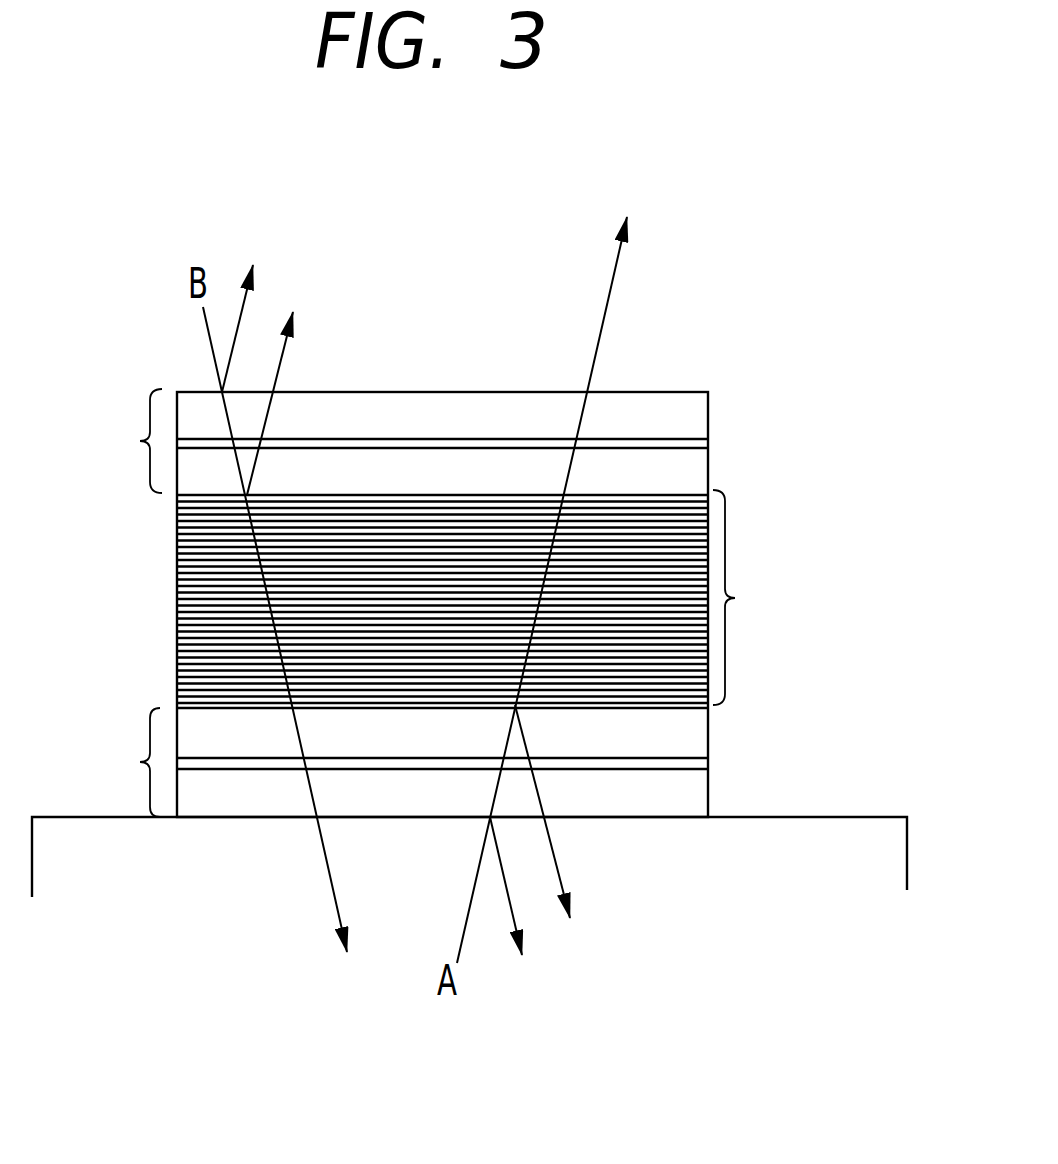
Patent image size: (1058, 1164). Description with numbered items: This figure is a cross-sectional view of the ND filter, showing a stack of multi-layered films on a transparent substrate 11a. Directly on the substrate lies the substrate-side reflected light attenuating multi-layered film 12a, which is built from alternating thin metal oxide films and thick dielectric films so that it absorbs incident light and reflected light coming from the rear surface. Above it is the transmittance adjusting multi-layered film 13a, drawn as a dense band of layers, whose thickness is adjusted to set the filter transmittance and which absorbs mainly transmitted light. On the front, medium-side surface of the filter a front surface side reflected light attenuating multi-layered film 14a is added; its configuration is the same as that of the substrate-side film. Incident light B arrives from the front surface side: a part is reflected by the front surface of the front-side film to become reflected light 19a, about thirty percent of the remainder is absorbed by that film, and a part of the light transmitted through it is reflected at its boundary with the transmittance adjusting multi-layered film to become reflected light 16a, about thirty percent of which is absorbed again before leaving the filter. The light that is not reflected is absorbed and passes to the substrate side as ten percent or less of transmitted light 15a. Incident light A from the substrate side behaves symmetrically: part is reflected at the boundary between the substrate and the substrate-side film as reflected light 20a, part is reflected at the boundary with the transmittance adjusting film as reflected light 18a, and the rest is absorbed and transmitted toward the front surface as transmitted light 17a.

The transparent substrate 11a is at (870, 812).
The substrate-side reflected light attenuating multi-layered film 12a is at (140, 762).
The transmittance adjusting multi-layered film 13a is at (740, 598).
The front surface side reflected light attenuating multi-layered film 14a is at (140, 441).
The transmitted light 15a is at (330, 878).
The reflected light 16a is at (283, 360).
The transmitted light 17a is at (608, 300).
The reflected light 18a is at (562, 872).
The reflected light 19a is at (247, 303).
The reflected light 20a is at (515, 915).